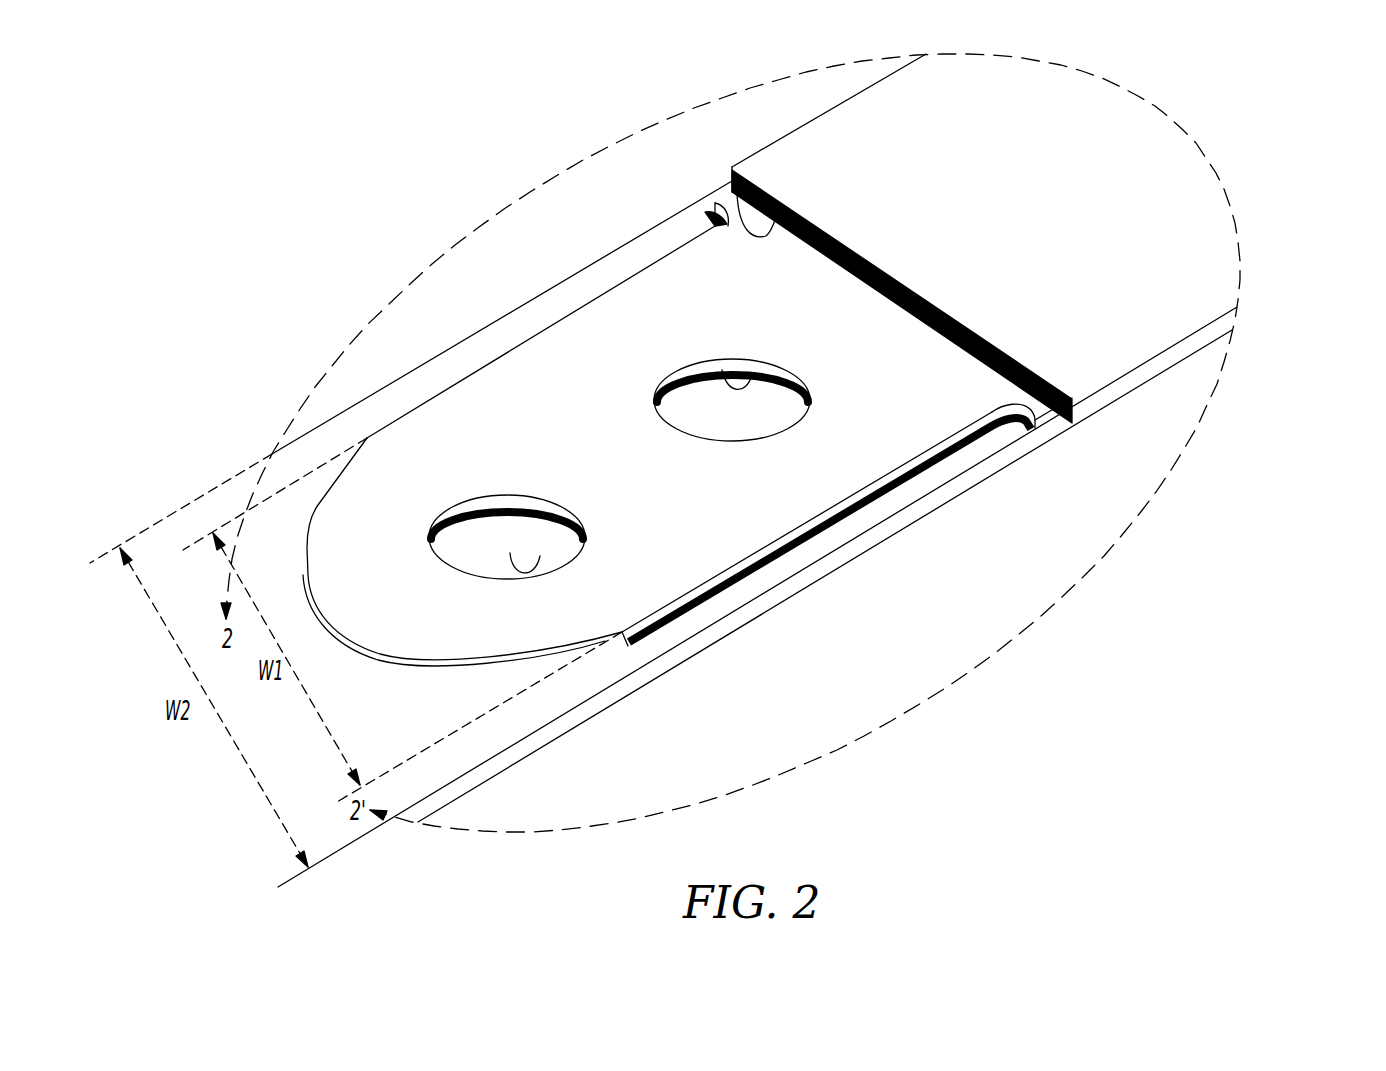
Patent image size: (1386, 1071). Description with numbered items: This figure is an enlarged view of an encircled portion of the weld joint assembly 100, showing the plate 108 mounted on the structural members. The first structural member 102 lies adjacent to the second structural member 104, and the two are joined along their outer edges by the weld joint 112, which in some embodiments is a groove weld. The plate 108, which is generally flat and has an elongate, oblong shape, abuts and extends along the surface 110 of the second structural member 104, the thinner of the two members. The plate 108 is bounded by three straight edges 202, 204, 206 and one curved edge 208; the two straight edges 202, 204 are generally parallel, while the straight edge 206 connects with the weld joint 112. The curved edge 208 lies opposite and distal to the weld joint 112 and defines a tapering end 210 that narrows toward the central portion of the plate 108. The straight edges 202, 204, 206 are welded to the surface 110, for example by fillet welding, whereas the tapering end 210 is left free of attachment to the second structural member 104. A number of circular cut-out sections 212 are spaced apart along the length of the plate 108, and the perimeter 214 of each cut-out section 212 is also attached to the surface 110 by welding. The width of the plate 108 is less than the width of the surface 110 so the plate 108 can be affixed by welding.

The weld joint assembly 100 is at (1278, 113).
The first structural member 102 is at (1157, 307).
The second structural member 104 is at (389, 405).
The plate 108 is at (532, 385).
The surface 110 is at (663, 648).
The weld joint 112 is at (1080, 430).
The straight edge 202 is at (897, 487).
The straight edge 204 is at (463, 392).
The straight edge 206 is at (722, 187).
The curved edge 208 is at (390, 655).
The tapering end 210 is at (322, 478).
The cut-out sections 212 is at (702, 400).
The perimeter 214 is at (720, 372).